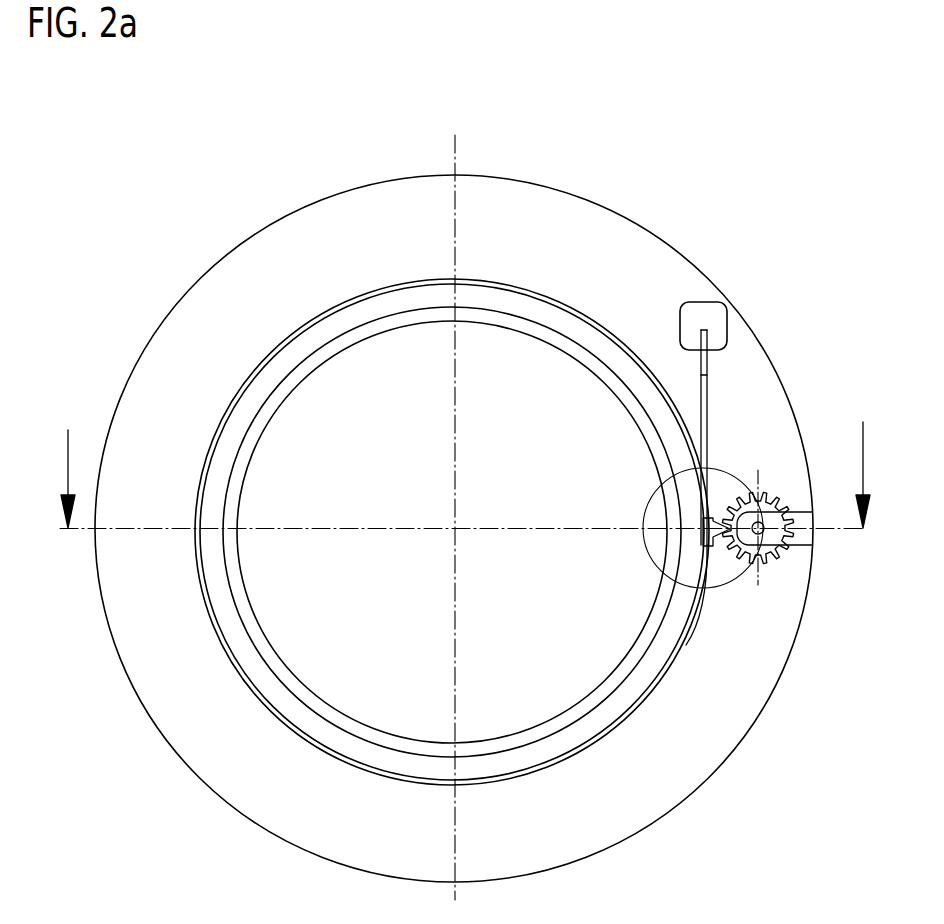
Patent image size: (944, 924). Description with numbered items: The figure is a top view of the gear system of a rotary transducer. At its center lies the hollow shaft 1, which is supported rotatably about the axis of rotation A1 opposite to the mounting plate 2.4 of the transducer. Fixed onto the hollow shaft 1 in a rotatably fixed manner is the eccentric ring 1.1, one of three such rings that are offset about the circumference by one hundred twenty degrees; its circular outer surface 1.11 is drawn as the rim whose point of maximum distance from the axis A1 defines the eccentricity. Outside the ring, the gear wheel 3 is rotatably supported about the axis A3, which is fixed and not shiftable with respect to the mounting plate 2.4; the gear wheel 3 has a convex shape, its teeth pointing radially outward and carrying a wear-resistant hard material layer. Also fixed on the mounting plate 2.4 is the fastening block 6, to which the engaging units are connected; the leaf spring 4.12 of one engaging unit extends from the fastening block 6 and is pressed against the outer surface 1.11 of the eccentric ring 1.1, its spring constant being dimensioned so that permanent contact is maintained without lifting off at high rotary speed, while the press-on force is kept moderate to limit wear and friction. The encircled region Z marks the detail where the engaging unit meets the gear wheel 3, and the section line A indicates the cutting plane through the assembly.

The hollow shaft 1 is at (545, 332).
The eccentric ring 1.1 is at (612, 357).
The circular outer surface 1.11 is at (598, 326).
The mounting plate 2.4 is at (768, 424).
The gear wheel 3 is at (770, 573).
The leaf spring 4.12 is at (707, 372).
The fastening block 6 is at (715, 318).
The section line A- A is at (457, 475).
The axis of rotation A1 is at (455, 528).
The axis A3 is at (765, 533).
The detail Z is at (640, 497).